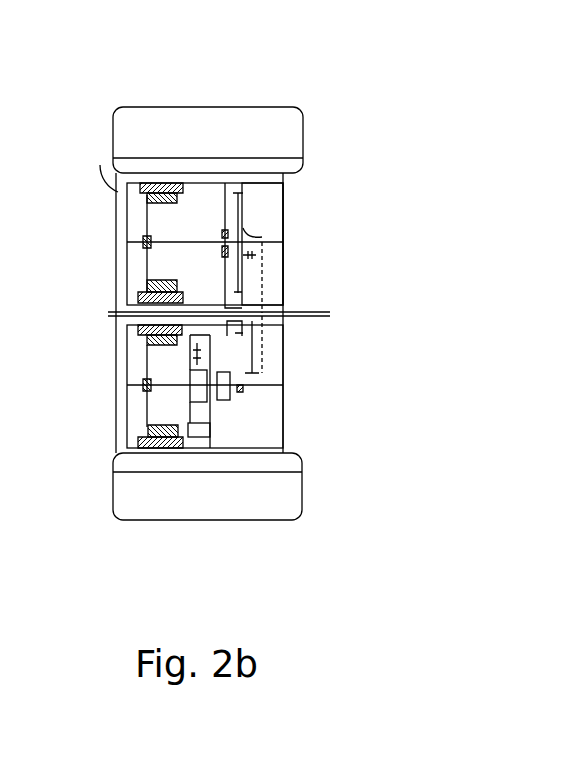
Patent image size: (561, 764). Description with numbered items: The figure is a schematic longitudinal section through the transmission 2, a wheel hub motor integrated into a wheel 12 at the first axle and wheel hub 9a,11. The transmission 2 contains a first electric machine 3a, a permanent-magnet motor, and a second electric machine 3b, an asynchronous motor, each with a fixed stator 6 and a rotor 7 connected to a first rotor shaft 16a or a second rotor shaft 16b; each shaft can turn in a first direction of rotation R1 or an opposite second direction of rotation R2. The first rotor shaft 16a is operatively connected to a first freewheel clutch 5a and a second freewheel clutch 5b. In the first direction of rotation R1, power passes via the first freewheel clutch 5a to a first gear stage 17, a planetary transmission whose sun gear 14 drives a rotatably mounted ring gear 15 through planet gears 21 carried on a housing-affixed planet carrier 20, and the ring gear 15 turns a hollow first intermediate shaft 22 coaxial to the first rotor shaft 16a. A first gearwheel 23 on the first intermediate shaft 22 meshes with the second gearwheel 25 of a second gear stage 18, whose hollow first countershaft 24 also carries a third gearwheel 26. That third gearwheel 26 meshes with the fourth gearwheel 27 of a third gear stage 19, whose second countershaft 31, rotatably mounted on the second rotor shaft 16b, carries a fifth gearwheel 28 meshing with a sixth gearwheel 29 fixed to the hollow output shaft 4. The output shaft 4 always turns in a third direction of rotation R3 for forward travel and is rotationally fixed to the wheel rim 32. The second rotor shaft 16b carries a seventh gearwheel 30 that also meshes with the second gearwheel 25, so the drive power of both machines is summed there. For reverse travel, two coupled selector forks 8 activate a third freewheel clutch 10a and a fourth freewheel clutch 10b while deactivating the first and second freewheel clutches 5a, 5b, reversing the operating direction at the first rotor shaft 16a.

The transmission 2 is at (312, 196).
The first electric machine 3a is at (128, 340).
The second electric machine 3b is at (207, 190).
The output shaft 4 is at (106, 307).
The first freewheel clutch 5a is at (147, 430).
The second freewheel clutch 5b is at (212, 437).
The stator 6 is at (160, 186).
The rotor 7 is at (142, 186).
The selector forks 8 is at (263, 256).
The first axle and wheel hub 9a,11 is at (305, 315).
The third freewheel clutch 10a is at (197, 448).
The fourth freewheel clutch 10b is at (248, 400).
The wheel 12 is at (310, 92).
The sun gear 14 is at (190, 449).
The ring gear 15 is at (200, 335).
The first rotor shaft 16a is at (187, 345).
The second rotor shaft 16b is at (183, 240).
The first gear stage 17 is at (187, 448).
The second gear stage 18 is at (265, 415).
The third gear stage 19 is at (256, 190).
The planet carrier 20 is at (189, 392).
The planet gears 21 is at (183, 448).
The first intermediate shaft 22 is at (233, 402).
The first gearwheel 23 is at (262, 400).
The first countershaft 24 is at (254, 350).
The second gearwheel 25 is at (262, 372).
The third gearwheel 26 is at (284, 295).
The fourth gearwheel 27 is at (283, 290).
The fifth gearwheel 28 is at (283, 226).
The sixth gearwheel 29 is at (250, 327).
The seventh gearwheel 30 is at (222, 183).
The second countershaft 31 is at (247, 233).
The wheel rim 32 is at (140, 198).
The first direction of rotation R1 is at (103, 200).
The second direction of rotation R2 is at (97, 270).
The third direction of rotation R3 is at (104, 313).